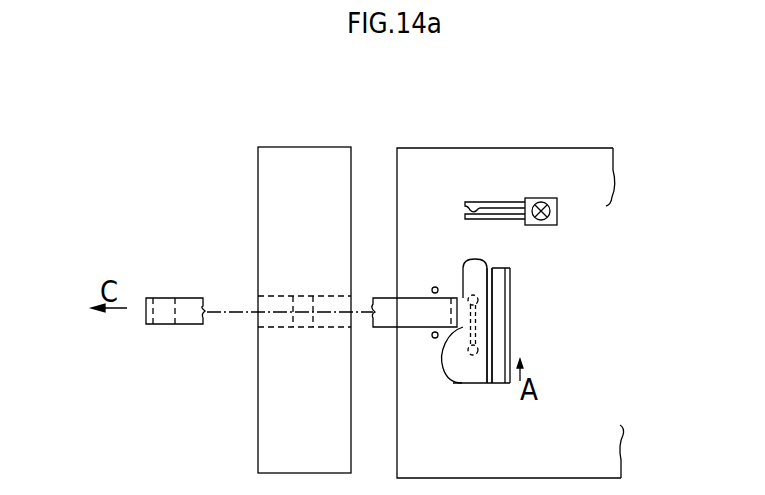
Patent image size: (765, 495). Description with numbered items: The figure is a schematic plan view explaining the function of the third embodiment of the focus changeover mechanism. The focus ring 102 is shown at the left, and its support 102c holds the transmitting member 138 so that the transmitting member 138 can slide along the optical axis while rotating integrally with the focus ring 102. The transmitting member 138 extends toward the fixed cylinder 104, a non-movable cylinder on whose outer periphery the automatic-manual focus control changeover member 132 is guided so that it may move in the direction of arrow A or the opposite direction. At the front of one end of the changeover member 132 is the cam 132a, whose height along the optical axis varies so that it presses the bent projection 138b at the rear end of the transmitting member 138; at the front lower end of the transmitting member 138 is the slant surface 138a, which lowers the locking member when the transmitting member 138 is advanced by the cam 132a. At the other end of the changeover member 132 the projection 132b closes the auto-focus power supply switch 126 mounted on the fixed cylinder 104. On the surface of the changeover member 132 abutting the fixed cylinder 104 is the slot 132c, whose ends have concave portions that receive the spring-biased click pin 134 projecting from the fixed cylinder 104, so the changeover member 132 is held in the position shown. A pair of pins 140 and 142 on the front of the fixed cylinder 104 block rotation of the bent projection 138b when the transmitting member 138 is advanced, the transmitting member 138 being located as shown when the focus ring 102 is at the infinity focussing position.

The focus ring 102 is at (305, 147).
The support 102c is at (303, 294).
The fixed cylinder 104 is at (473, 148).
The auto-focus power supply switch 126 is at (557, 222).
The automatic-manual focus control changeover member 132 is at (522, 335).
The cam 132a is at (442, 373).
The projection 132b is at (487, 257).
The slot 132c is at (492, 334).
The click pin 134 is at (492, 289).
The transmitting member 138 is at (320, 289).
The slant surface 138a is at (165, 324).
The bent projection 138b is at (453, 298).
The pin 140 is at (432, 337).
The pin 142 is at (432, 287).